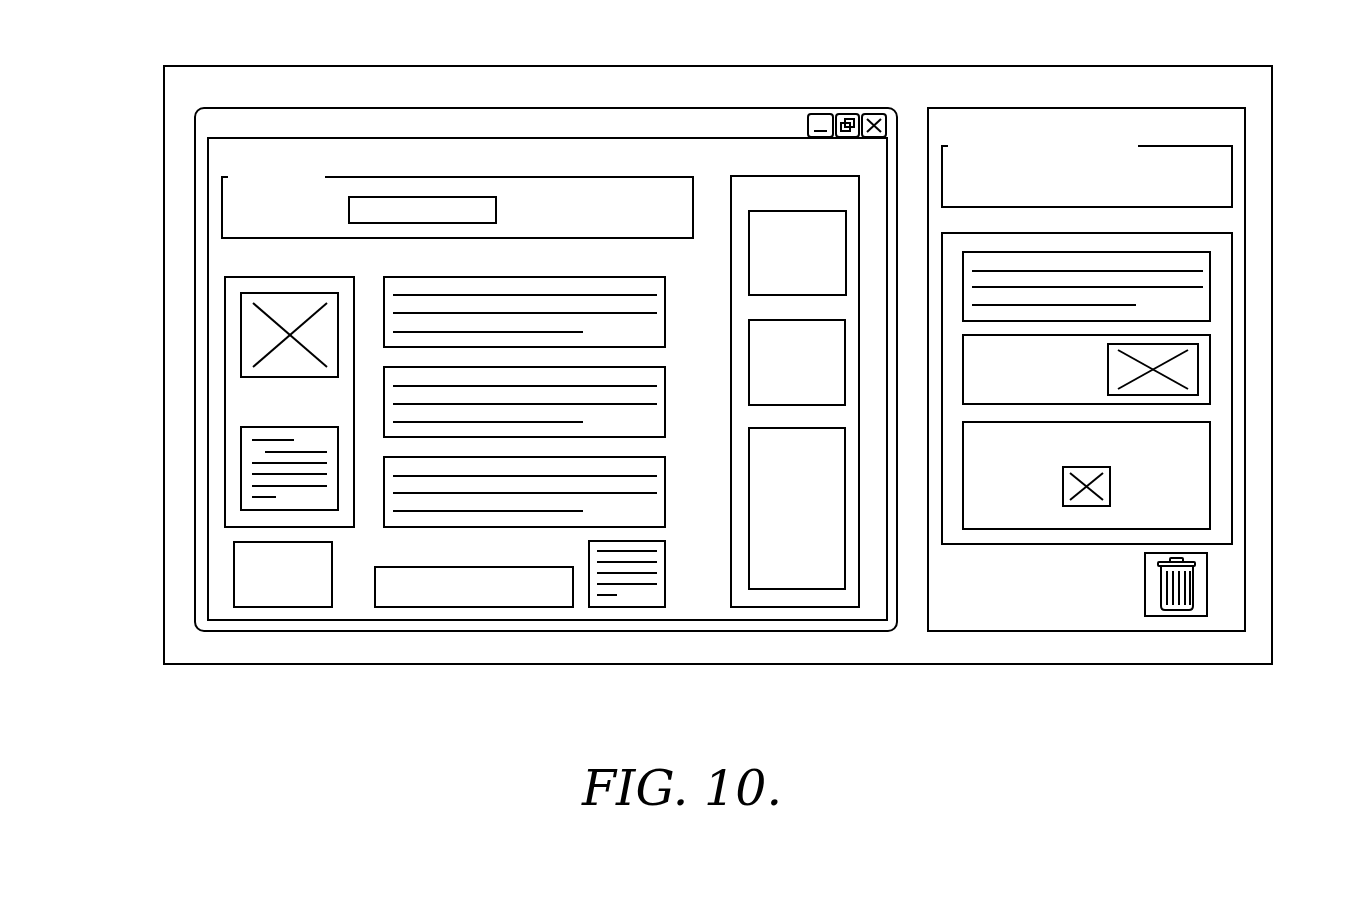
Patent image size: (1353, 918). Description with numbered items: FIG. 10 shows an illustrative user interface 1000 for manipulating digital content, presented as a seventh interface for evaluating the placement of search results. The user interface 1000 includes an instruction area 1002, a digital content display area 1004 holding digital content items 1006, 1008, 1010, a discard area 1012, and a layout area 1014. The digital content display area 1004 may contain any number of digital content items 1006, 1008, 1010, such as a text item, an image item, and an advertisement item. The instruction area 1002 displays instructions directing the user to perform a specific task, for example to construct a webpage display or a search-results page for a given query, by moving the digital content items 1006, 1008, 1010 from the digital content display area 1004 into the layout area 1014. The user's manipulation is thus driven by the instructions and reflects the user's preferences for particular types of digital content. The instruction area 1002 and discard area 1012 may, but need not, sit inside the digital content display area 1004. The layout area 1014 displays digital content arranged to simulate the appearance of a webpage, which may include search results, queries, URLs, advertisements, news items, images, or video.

The user interface 1000 is at (137, 110).
The layout area 1014 is at (703, 108).
The instruction area 1002 is at (1232, 173).
The digital content display area 1004 is at (1232, 253).
The digital content item 1006 is at (1210, 292).
The digital content item 1008 is at (1210, 363).
The digital content item 1010 is at (1210, 473).
The discard area 1012 is at (1207, 570).